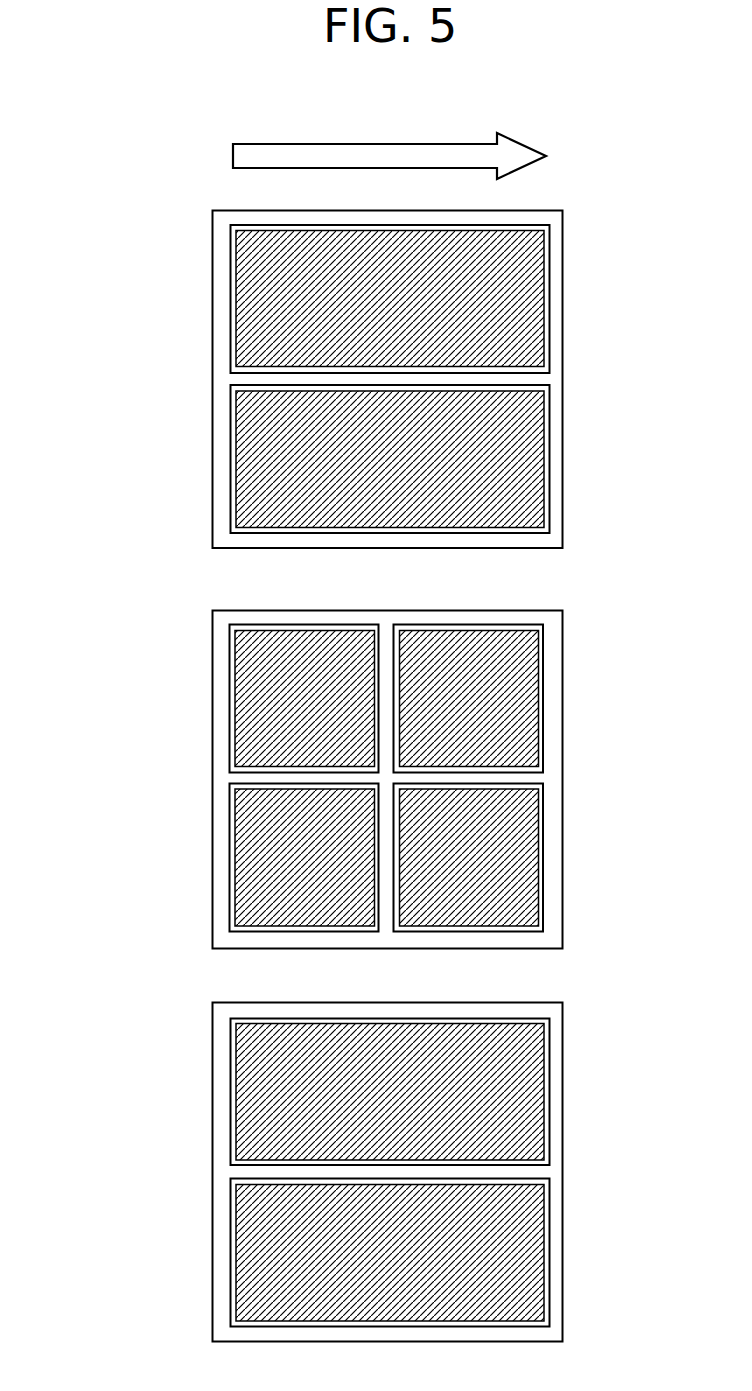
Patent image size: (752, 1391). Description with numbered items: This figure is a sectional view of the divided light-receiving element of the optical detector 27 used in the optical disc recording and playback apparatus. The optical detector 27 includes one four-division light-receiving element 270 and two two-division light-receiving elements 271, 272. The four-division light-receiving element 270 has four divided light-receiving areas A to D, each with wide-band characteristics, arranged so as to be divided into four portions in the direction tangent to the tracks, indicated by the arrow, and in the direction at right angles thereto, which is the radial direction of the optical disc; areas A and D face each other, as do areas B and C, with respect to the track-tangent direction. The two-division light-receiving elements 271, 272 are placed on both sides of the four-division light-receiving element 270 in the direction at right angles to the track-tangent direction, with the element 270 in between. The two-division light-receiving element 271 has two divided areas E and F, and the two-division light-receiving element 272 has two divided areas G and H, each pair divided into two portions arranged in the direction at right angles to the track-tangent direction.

The optical detector 27 is at (101, 366).
The four-division light-receiving element 270 is at (562, 730).
The two-division light-receiving element 271 is at (562, 332).
The two-division light-receiving element 272 is at (562, 1122).